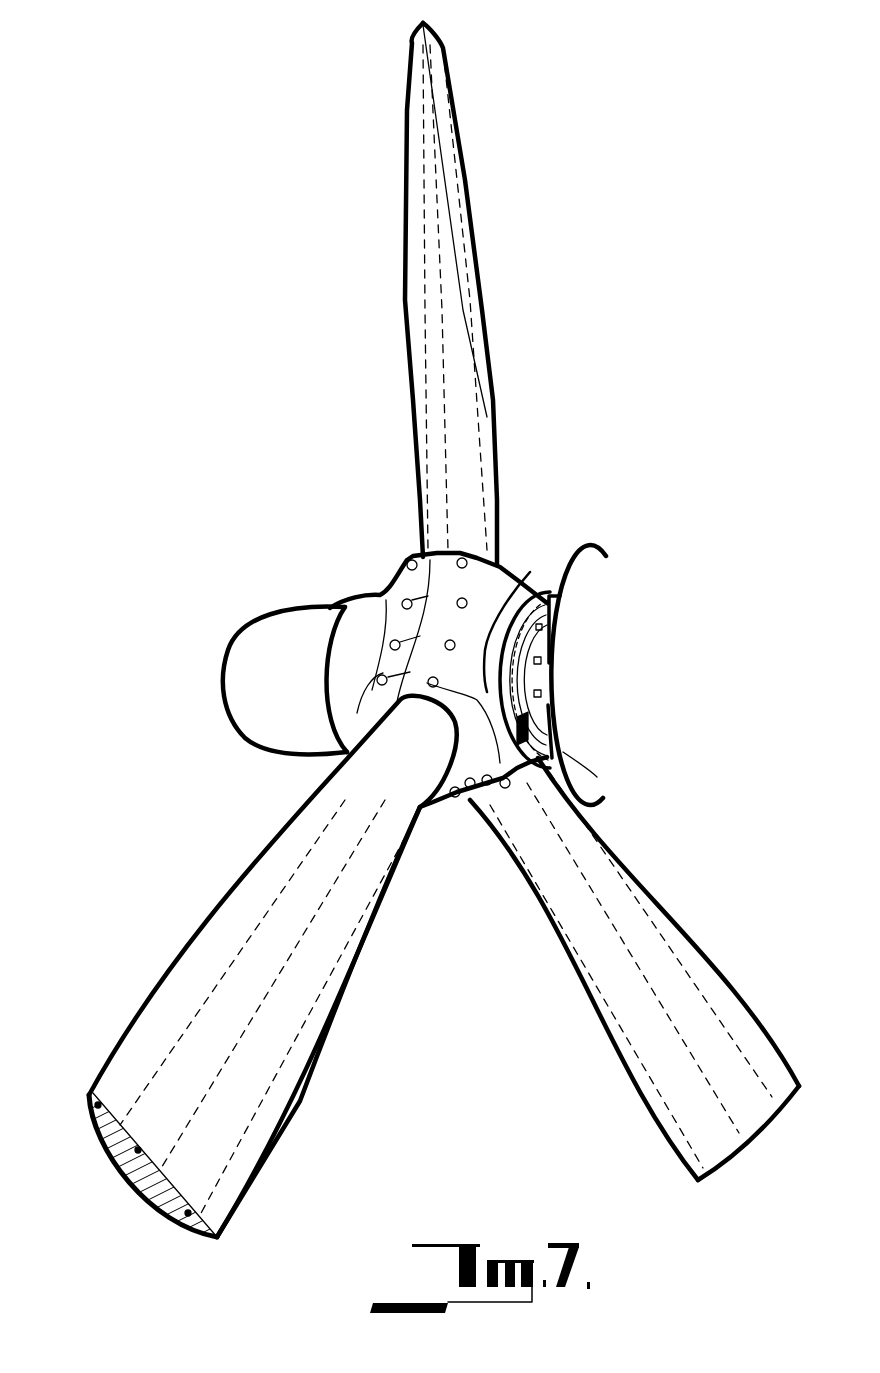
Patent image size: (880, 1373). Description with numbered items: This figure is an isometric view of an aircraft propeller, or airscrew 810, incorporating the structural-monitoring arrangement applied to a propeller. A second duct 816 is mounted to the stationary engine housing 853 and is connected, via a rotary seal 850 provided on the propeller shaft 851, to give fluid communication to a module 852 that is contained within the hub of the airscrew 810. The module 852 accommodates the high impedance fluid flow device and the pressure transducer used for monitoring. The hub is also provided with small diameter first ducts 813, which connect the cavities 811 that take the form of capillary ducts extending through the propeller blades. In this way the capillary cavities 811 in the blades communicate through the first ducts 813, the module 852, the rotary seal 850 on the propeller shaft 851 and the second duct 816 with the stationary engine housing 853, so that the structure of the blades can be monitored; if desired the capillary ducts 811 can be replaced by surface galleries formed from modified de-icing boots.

The airscrew 810 is at (353, 602).
The cavities 811 is at (188, 1213).
The first ducts 813 is at (545, 600).
The second duct 816 is at (553, 727).
The rotary seal 850 is at (545, 650).
The propeller shaft 851 is at (557, 618).
The module 852 is at (557, 687).
The engine housing 853 is at (575, 585).